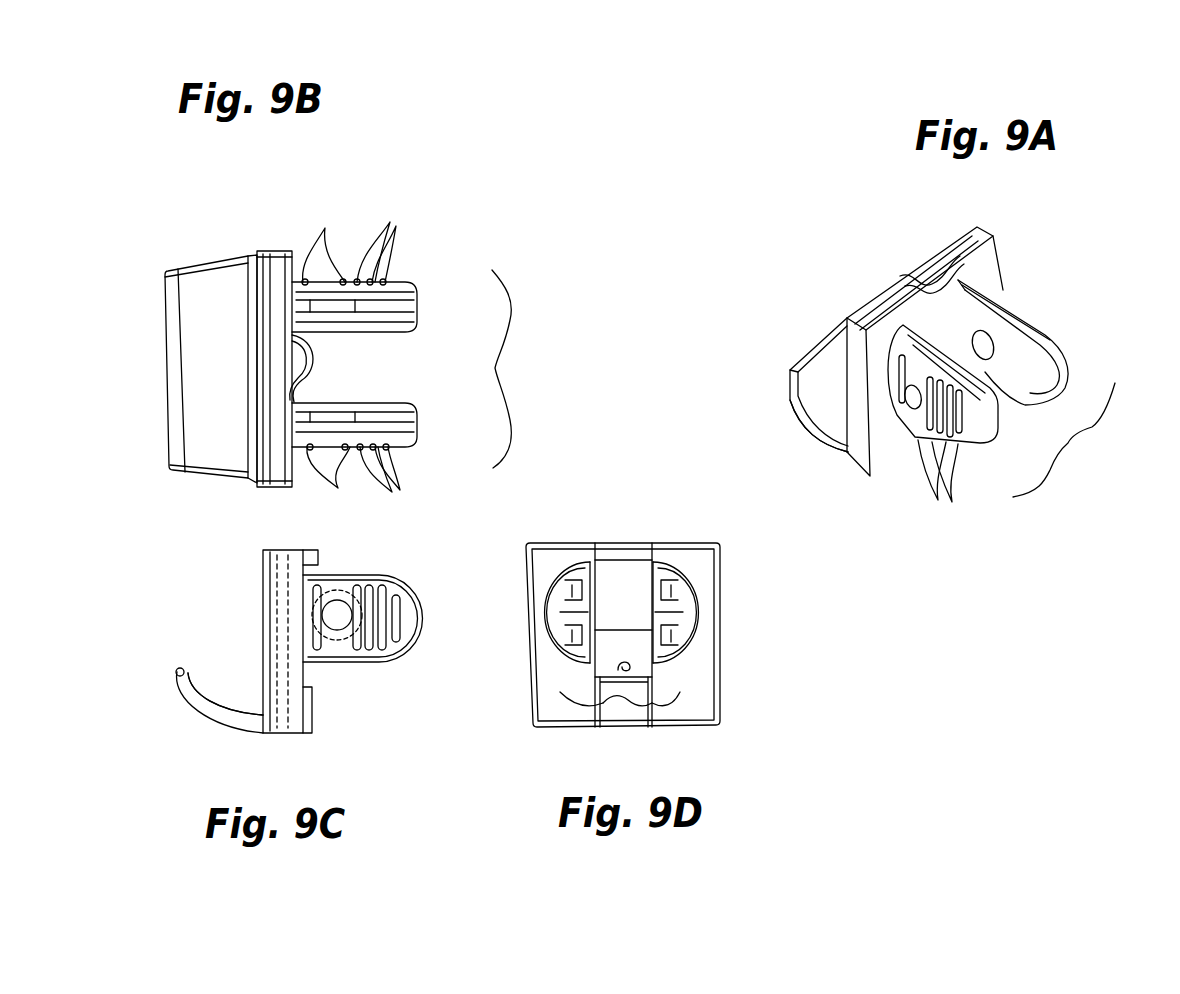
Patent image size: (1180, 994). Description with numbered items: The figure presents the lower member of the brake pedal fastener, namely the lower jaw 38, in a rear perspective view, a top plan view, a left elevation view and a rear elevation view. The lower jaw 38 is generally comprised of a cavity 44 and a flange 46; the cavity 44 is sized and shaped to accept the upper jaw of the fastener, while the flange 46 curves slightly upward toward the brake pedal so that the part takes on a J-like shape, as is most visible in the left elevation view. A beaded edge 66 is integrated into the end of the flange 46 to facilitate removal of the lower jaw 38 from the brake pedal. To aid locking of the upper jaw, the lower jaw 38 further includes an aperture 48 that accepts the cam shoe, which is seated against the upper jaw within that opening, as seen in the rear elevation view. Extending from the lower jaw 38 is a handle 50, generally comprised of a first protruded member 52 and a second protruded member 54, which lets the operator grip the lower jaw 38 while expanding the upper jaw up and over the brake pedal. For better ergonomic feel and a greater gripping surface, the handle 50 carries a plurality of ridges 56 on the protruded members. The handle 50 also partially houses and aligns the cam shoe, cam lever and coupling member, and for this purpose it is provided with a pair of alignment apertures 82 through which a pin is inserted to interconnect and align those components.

In FIG. 9B, the lower jaw 38 is at (136, 244).
In FIG. 9A, the lower jaw 38 is at (1008, 210).
In FIG. 9C, the lower jaw 38 is at (234, 576).
In FIG. 9D, the lower jaw 38 is at (754, 648).
In FIG. 9B, the cavity 44 is at (270, 256).
In FIG. 9A, the cavity 44 is at (932, 282).
In FIG. 9C, the cavity 44 is at (290, 641).
In FIG. 9B, the flange 46 is at (226, 262).
In FIG. 9A, the flange 46 is at (838, 450).
In FIG. 9C, the flange 46 is at (210, 720).
In FIG. 9D, the aperture 48 is at (623, 570).
In FIG. 9B, the handle 50 is at (515, 369).
In FIG. 9A, the handle 50 is at (1064, 440).
In FIG. 9D, the handle 50 is at (610, 690).
In FIG. 9B, the first protruded member 52 is at (420, 418).
In FIG. 9A, the first protruded member 52 is at (975, 450).
In FIG. 9C, the first protruded member 52 is at (413, 650).
In FIG. 9D, the first protruded member 52 is at (553, 650).
In FIG. 9B, the second protruded member 54 is at (418, 323).
In FIG. 9A, the second protruded member 54 is at (1075, 354).
In FIG. 9D, the second protruded member 54 is at (698, 583).
In FIG. 9B, the ridges 56 is at (172, 330).
In FIG. 9A, the ridges 56 is at (903, 382).
In FIG. 9C, the ridges 56 is at (388, 584).
In FIG. 9A, the beaded edge 66 is at (805, 355).
In FIG. 9C, the beaded edge 66 is at (180, 670).
In FIG. 9A, the alignment apertures 82 is at (985, 343).
In FIG. 9C, the alignment apertures 82 is at (339, 600).